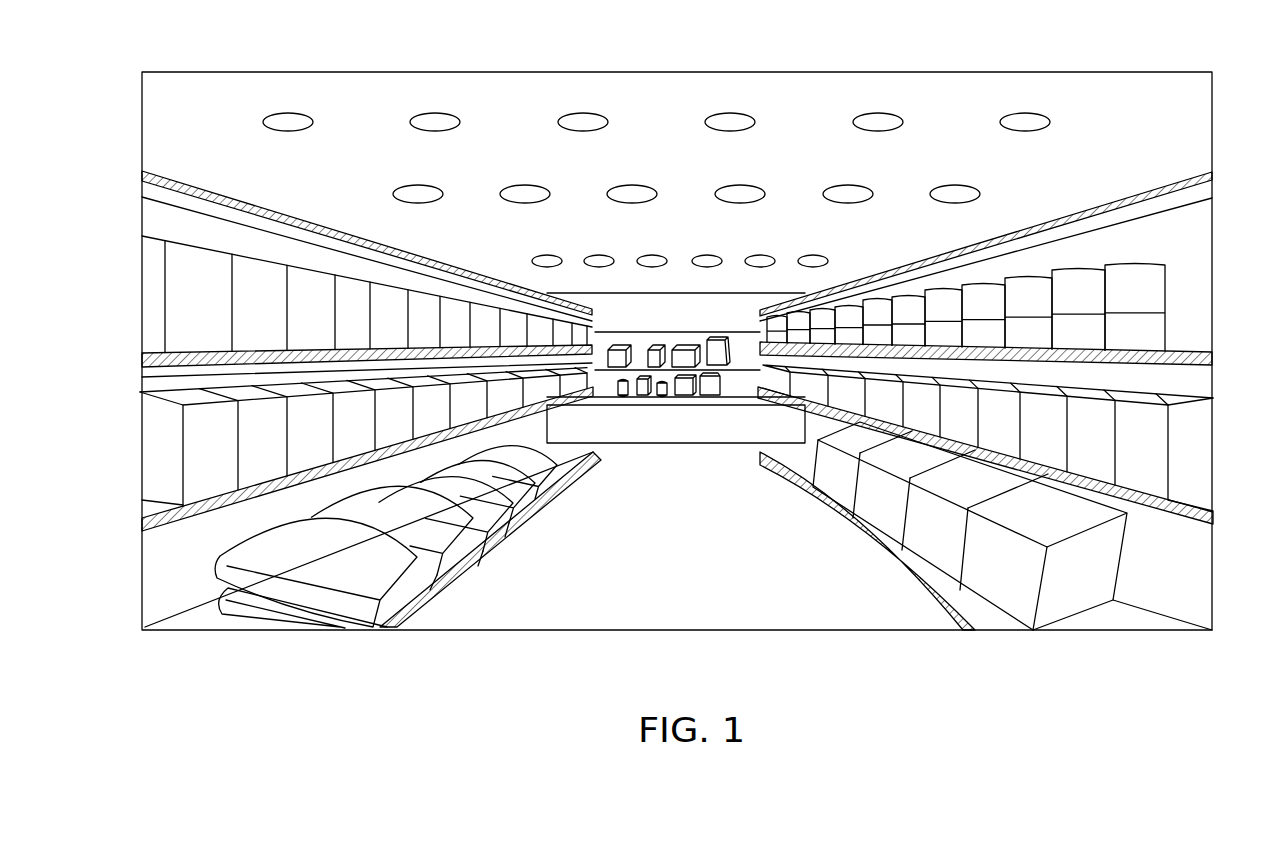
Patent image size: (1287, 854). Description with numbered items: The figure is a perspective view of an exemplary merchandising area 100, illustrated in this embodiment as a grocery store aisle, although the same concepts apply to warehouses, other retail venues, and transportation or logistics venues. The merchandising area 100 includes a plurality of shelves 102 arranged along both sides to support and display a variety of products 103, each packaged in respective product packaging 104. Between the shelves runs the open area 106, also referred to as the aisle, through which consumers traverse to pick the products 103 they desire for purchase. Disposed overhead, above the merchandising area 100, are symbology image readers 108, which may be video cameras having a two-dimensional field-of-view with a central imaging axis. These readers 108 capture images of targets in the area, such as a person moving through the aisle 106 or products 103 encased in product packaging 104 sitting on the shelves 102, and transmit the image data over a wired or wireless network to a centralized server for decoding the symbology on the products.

The merchandising area 100 is at (1076, 38).
The shelves 102 is at (142, 365).
The products 103 is at (147, 313).
The product packaging 104 is at (187, 283).
The open area 106 is at (692, 556).
The symbology image readers 108 is at (264, 122).